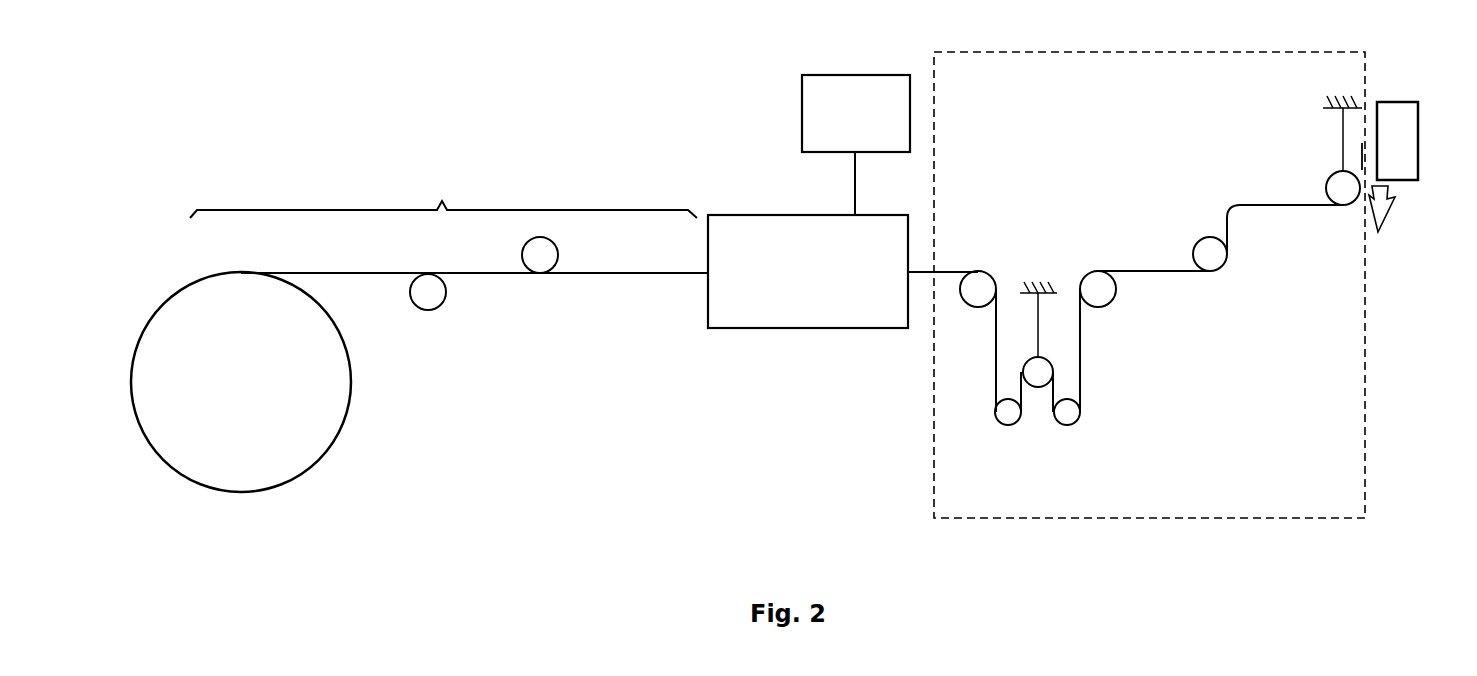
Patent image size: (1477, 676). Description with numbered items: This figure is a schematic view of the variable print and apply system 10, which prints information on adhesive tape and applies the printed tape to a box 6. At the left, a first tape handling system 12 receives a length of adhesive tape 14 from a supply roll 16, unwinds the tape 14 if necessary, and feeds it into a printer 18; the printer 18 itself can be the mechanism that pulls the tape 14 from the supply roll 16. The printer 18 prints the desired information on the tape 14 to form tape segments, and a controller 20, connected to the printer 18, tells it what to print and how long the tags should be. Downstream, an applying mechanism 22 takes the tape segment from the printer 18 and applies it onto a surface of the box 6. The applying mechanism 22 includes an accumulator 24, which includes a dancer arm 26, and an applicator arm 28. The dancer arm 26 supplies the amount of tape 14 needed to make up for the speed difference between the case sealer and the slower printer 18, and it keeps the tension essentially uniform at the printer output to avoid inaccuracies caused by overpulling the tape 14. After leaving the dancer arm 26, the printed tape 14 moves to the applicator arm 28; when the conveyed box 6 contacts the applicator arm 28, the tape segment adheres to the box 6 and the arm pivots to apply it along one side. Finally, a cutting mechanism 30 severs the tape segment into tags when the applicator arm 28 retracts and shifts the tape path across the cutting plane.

The variable print and apply system 10 is at (722, 386).
The first tape handling system 12 is at (443, 196).
The tape 14 is at (350, 270).
The supply roll 16 is at (322, 424).
The printer 18 is at (787, 233).
The controller 20 is at (856, 145).
The applying mechanism 22 is at (1288, 52).
The accumulator 24 is at (1076, 435).
The dancer arm 26 is at (1040, 300).
The applicator arm 28 is at (1340, 118).
The cutting mechanism 30 is at (1385, 205).
The box 6 is at (1413, 143).